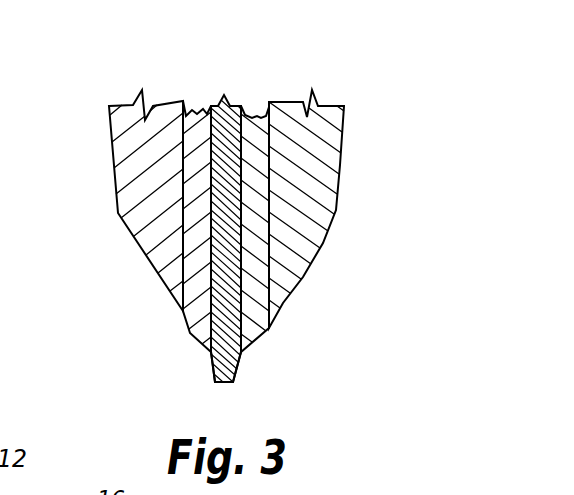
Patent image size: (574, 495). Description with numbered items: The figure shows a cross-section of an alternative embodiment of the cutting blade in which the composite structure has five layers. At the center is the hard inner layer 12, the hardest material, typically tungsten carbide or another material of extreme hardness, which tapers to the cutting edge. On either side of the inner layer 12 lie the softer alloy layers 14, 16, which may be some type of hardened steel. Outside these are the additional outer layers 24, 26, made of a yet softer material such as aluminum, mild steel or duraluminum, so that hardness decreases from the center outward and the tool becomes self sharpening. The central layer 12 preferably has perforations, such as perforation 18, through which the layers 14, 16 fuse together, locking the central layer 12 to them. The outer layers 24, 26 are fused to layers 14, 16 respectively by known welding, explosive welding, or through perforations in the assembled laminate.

The hard inner layer 12 is at (214, 106).
The softer alloy layer 14 is at (199, 110).
The softer alloy layer 16 is at (255, 117).
The perforation 18 is at (184, 375).
The outer layer of material 24 is at (122, 145).
The outer layer of material 26 is at (307, 180).